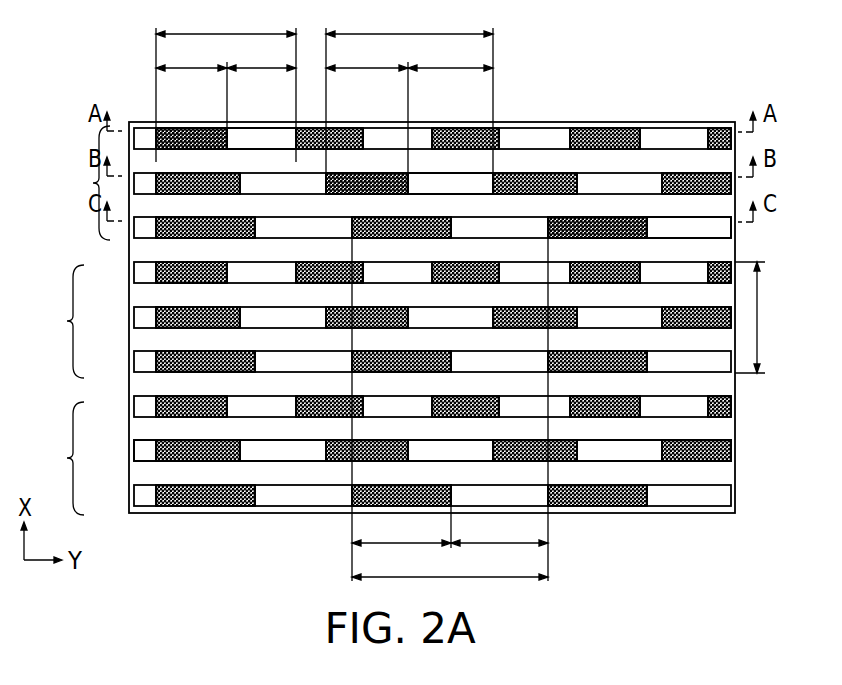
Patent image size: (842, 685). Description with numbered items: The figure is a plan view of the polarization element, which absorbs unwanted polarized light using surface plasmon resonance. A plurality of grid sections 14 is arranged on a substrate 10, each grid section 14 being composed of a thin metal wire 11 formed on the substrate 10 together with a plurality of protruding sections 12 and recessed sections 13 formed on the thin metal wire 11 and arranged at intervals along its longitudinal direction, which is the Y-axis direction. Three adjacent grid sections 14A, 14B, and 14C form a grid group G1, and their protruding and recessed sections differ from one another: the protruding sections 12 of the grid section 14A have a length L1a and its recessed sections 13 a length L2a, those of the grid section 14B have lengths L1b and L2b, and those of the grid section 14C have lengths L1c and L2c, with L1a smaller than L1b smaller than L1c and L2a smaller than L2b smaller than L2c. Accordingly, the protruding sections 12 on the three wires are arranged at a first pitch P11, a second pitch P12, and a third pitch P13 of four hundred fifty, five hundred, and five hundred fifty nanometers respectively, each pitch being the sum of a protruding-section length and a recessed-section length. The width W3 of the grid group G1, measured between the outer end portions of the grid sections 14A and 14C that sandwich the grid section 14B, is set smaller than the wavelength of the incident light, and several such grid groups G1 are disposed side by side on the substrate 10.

The substrate 10 is at (735, 506).
The thin metal wire 11 is at (458, 464).
The protruding section 12 is at (260, 138).
The recessed section 13 is at (193, 137).
The grid section 14 is at (722, 454).
The grid section 14A is at (138, 142).
The grid section 14B is at (138, 188).
The grid section 14C is at (138, 233).
The grid group G1 is at (56, 320).
The first pitch P11 is at (226, 85).
The second pitch P12 is at (409, 90).
The third pitch P13 is at (450, 409).
The length of the protruding section of grid section 14A L1a is at (261, 56).
The length of the recessed section of grid section 14A L2a is at (191, 85).
The length of the protruding section of grid section 14B L1b is at (450, 56).
The length of the recessed section of grid section 14B L2b is at (367, 107).
The length of the protruding section of grid section 14C L1c is at (499, 531).
The length of the recessed section of grid section 14C L2c is at (401, 527).
The width of the grid group W3 is at (762, 317).